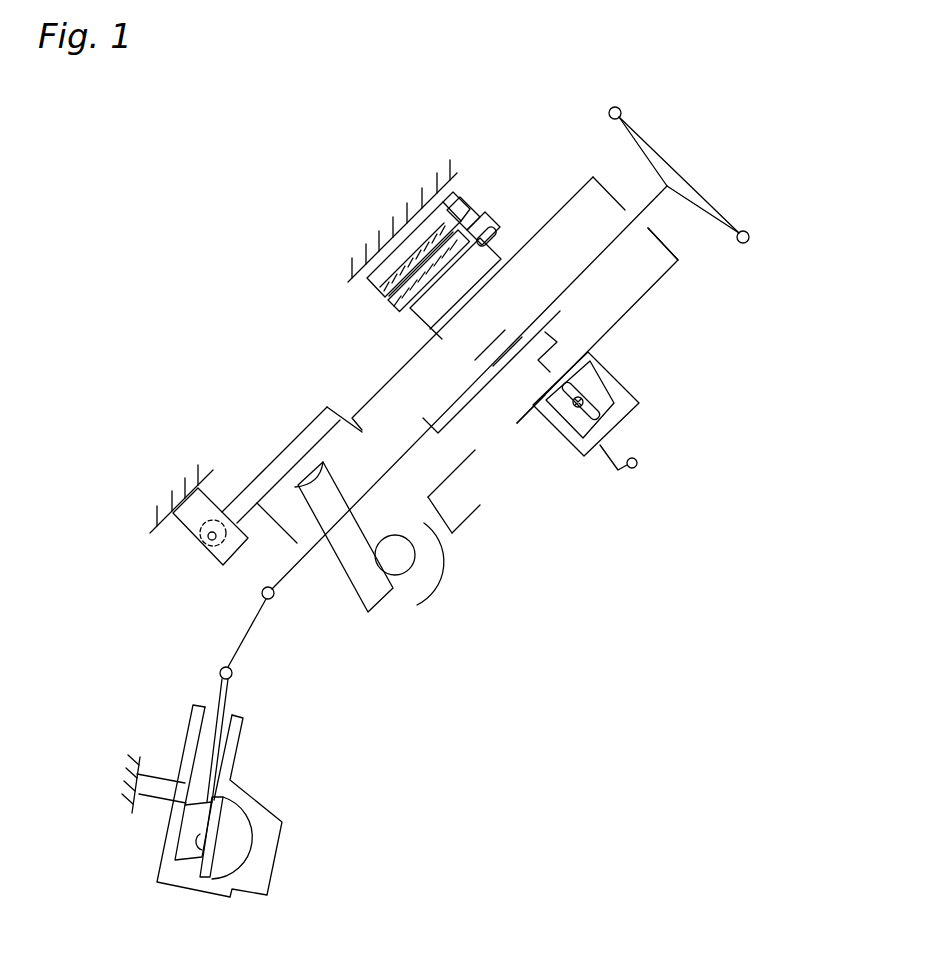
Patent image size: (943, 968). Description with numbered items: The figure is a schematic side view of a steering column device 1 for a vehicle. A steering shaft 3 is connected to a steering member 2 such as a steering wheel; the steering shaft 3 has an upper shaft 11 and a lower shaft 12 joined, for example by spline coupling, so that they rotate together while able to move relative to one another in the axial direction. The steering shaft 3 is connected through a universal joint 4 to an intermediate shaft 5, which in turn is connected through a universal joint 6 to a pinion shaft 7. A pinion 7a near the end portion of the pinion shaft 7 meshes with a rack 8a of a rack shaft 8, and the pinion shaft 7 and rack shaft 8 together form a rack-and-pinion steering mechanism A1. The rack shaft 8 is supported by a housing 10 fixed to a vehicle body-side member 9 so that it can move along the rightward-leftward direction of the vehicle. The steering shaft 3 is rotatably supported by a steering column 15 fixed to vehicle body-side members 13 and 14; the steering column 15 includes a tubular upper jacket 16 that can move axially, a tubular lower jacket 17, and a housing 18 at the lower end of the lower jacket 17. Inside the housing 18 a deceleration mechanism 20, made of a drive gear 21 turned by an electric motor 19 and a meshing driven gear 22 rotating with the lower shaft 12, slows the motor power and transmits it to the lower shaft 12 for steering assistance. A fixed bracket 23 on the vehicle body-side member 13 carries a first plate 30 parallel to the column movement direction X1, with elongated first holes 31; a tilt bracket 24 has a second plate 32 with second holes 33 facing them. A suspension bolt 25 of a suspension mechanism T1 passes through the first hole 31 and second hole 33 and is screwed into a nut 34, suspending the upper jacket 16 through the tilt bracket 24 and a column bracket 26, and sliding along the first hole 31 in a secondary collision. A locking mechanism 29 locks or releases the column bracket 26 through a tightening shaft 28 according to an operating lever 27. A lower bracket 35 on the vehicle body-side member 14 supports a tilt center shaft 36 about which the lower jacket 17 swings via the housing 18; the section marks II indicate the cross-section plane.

The steering column device 1 is at (682, 152).
The steering member 2 is at (704, 195).
The steering shaft 3 is at (648, 203).
The universal joint 4 is at (262, 595).
The intermediate shaft 5 is at (243, 640).
The universal joint 6 is at (220, 672).
The pinion shaft 7 is at (226, 690).
The pinion 7a is at (186, 832).
The rack shaft 8 is at (258, 838).
The rack 8a is at (197, 845).
The vehicle body-side member 9 is at (130, 778).
The housing 10 is at (192, 730).
The upper shaft 11 is at (593, 267).
The lower shaft 12 is at (470, 410).
The vehicle body-side member 13 is at (357, 260).
The vehicle body-side member 14 is at (163, 507).
The steering column 15 is at (661, 284).
The upper jacket 16 is at (518, 425).
The lower jacket 17 is at (452, 478).
The housing 18 is at (278, 455).
The electric motor 19 is at (449, 598).
The deceleration mechanism 20 is at (347, 482).
The drive gear 21 is at (402, 572).
The driven gear 22 is at (363, 530).
The fixed bracket 23 is at (368, 288).
The tilt bracket 24 is at (427, 326).
The suspension bolt 25 is at (428, 205).
The column bracket 26 is at (610, 402).
The operating lever 27 is at (612, 455).
The tightening shaft 28 is at (577, 407).
The locking mechanism 29 is at (628, 487).
The first plate 30 is at (470, 215).
The first hole 31 is at (420, 263).
The second plate 32 is at (472, 233).
The second hole 33 is at (472, 250).
The nut 34 is at (415, 306).
The lower bracket 35 is at (180, 525).
The tilt center shaft 36 is at (207, 542).
The steering mechanism A1 is at (245, 880).
The suspension mechanism T1 is at (455, 205).
The column movement direction X1 is at (544, 200).
The section line II is at (358, 152).